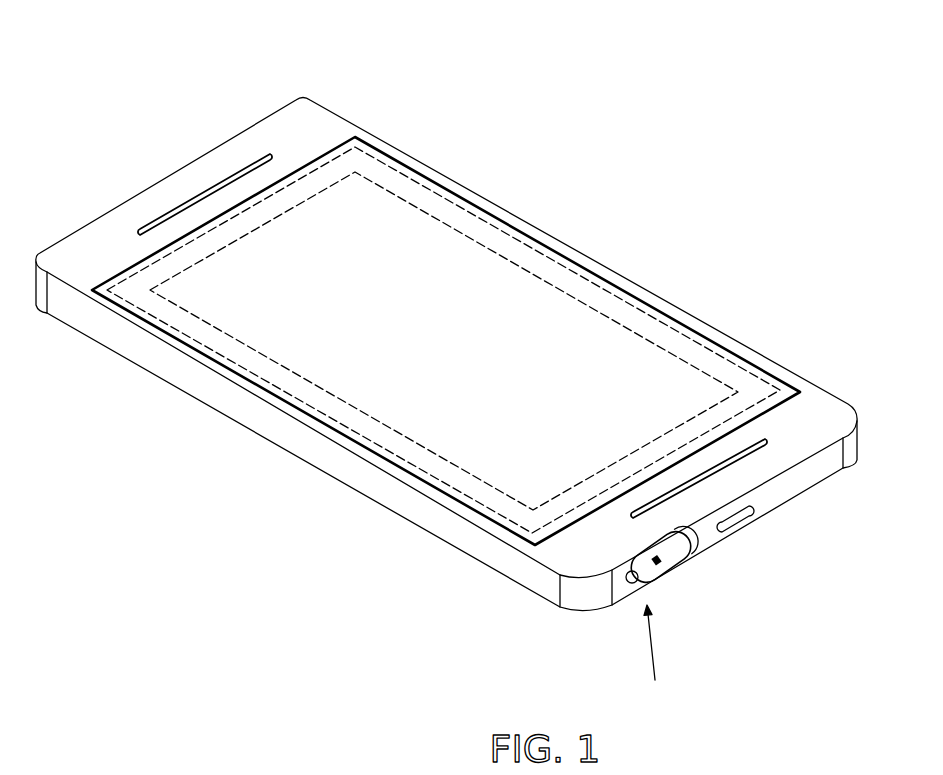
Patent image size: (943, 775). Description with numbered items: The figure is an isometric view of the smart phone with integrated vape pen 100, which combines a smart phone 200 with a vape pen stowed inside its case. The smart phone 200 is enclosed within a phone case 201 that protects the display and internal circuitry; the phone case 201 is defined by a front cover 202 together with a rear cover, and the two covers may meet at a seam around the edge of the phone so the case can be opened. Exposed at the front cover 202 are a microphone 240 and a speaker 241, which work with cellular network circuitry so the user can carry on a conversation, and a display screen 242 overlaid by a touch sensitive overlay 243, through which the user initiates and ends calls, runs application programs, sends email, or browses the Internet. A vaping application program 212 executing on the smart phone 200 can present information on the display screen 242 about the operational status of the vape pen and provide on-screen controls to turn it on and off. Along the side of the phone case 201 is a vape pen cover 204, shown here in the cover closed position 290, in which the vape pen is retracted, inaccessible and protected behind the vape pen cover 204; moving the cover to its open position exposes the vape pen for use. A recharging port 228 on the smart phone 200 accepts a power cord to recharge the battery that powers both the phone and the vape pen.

The smart phone with integrated vape pen 100 is at (478, 369).
The smart phone 200 is at (478, 332).
The phone case 201 is at (232, 400).
The front cover 202 is at (467, 302).
The vape pen cover 204 is at (650, 577).
The vaping application program 212 is at (446, 321).
The recharging port 228 is at (793, 494).
The microphone 240 is at (763, 443).
The speaker 241 is at (265, 155).
The display screen 242 is at (422, 180).
The touch sensitive overlay 243 is at (447, 205).
The cover closed position 290 is at (652, 658).